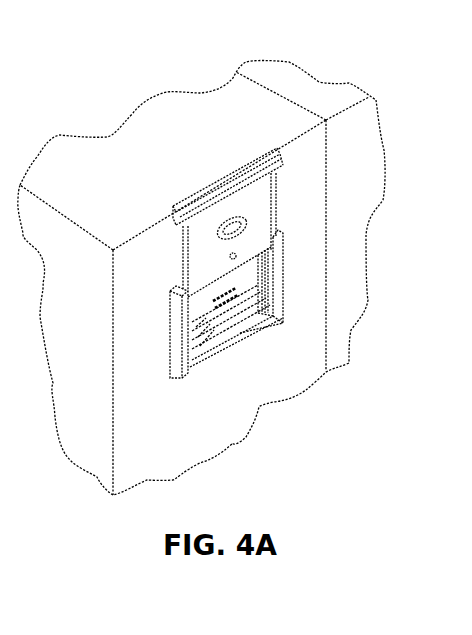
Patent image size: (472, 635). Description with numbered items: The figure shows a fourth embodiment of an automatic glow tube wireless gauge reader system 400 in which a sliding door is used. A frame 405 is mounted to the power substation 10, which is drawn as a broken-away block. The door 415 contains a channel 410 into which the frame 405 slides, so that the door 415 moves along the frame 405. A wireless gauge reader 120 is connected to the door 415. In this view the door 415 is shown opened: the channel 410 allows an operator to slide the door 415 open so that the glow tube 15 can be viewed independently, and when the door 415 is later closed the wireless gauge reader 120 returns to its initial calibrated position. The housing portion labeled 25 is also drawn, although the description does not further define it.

The power substation 10 is at (318, 86).
The glow tube 15 is at (226, 303).
The housing 25 is at (203, 300).
The wireless gauge reader 120 is at (227, 213).
The wireless gauge reader system 400 is at (160, 298).
The frame 405 is at (283, 250).
The channel 410 is at (183, 266).
The door 415 is at (225, 182).